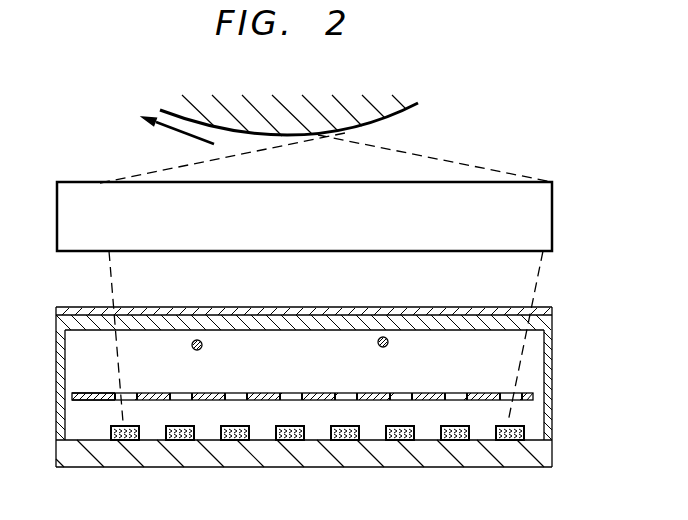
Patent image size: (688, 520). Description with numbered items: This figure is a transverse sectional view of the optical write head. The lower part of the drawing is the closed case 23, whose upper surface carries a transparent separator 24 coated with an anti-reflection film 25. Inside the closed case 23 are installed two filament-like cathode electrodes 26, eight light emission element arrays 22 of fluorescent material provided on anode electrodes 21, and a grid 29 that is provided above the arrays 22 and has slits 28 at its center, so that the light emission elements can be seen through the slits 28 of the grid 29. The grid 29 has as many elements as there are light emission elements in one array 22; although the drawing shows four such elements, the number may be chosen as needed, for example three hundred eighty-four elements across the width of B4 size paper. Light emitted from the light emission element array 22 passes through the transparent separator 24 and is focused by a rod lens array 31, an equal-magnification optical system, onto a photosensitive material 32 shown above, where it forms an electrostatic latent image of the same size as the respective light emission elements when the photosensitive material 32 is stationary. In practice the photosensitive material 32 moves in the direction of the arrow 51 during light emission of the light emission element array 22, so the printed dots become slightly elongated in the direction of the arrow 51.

The anode electrodes 21 is at (410, 467).
The light emission element arrays 22 is at (405, 440).
The closed case 23 is at (548, 452).
The transparent separator 24 is at (552, 321).
The anti-reflection film 25 is at (490, 308).
The cathode electrodes 26 is at (381, 338).
The slits 28 is at (192, 391).
The grid 29 is at (96, 392).
The rod lens array 31 is at (482, 181).
The photosensitive material 32 is at (396, 120).
The arrow 51 is at (181, 134).